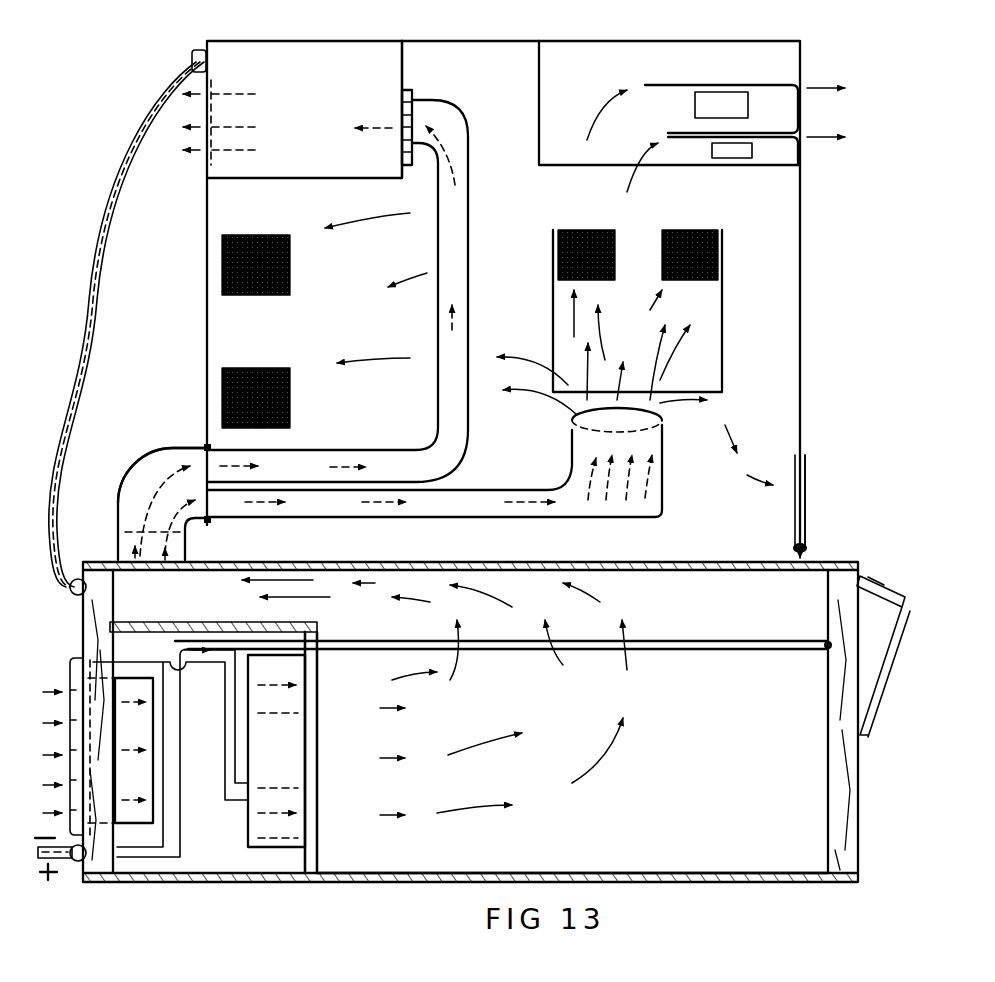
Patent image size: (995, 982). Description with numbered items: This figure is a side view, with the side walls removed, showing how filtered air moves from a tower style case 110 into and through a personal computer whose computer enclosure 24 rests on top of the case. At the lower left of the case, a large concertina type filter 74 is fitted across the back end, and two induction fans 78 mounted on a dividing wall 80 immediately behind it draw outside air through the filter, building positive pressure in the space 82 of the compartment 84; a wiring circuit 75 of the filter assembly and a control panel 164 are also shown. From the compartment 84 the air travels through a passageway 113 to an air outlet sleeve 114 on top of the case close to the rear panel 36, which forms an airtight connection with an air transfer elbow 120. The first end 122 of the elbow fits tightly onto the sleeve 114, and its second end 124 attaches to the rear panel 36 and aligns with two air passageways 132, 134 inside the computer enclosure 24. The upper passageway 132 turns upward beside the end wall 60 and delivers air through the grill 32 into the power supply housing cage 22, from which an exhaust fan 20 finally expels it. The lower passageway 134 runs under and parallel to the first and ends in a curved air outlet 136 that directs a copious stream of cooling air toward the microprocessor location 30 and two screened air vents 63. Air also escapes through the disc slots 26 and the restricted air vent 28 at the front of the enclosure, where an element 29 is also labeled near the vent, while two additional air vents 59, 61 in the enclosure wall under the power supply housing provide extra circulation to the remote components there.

The exhaust fan 20 is at (207, 133).
The power supply housing cage 22 is at (325, 180).
The computer enclosure 24 is at (407, 40).
The disc slots 26 is at (783, 95).
The air vent 28 is at (795, 504).
The sensor lead 29 is at (806, 504).
The microprocessor location 30 is at (650, 348).
The grill 32 is at (400, 117).
The rear panel 36 is at (207, 340).
The air vent 59 is at (290, 385).
The end wall 60 is at (402, 56).
The air vent 61 is at (290, 257).
The screened air vents 63 is at (612, 230).
The filter 74 is at (130, 780).
The wiring circuit 75 is at (183, 800).
The induction fans 78 is at (290, 753).
The dividing wall 80 is at (318, 850).
The space 82 is at (792, 737).
The compartment 84 is at (772, 813).
The tower style case 110 is at (140, 592).
The passageway 113 is at (248, 597).
The air outlet sleeve 114 is at (138, 547).
The air transfer elbow 120 is at (143, 470).
The first end 122 is at (197, 519).
The second end 124 is at (200, 447).
The air passageway 132 is at (437, 236).
The air passageway 134 is at (452, 503).
The curved air outlet 136 is at (663, 450).
The control panel 164 is at (886, 583).